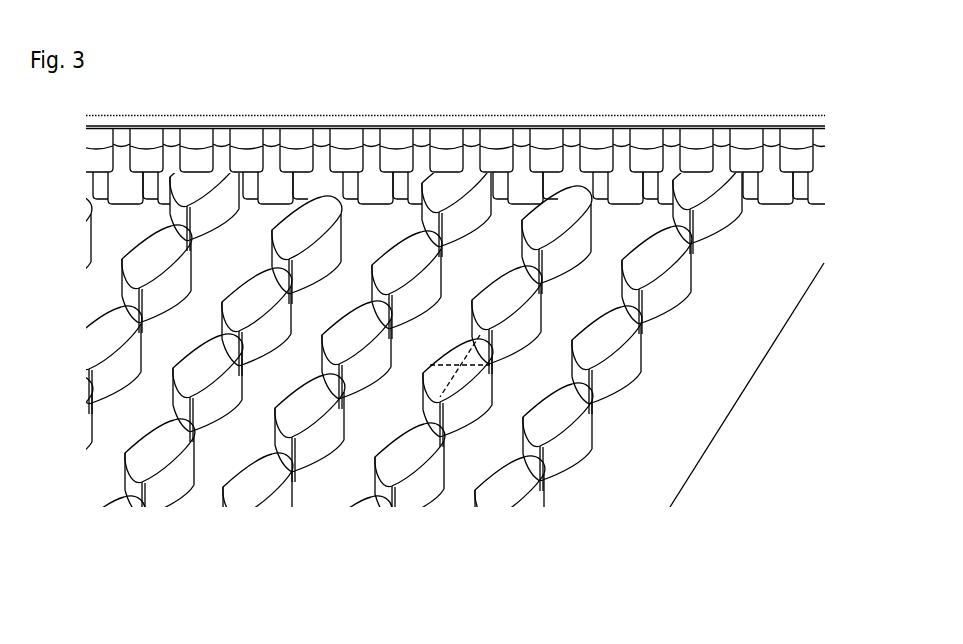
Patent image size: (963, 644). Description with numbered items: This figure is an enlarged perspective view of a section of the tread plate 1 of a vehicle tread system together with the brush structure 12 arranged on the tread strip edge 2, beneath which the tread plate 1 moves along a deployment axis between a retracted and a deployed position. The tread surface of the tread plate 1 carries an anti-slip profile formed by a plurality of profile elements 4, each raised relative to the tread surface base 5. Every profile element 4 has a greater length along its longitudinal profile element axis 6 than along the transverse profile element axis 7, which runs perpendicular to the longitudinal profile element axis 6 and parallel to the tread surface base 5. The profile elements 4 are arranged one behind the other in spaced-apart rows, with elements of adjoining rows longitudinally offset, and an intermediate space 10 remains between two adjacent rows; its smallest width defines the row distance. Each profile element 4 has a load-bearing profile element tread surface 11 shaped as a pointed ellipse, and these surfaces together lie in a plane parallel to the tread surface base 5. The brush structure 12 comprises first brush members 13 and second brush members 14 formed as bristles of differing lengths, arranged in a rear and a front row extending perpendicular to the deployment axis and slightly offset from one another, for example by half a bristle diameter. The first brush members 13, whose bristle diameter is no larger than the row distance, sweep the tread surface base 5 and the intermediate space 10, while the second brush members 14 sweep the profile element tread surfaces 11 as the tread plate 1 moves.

The tread plate 1 is at (618, 472).
The tread strip edge 2 is at (167, 118).
The profile element 4 is at (495, 492).
The tread surface base 5 is at (207, 480).
The longitudinal profile element axis 6 is at (445, 390).
The transverse profile element axis 7 is at (467, 368).
The intermediate space 10 is at (596, 270).
The profile element tread surface 11 is at (522, 472).
The brush structure 12 is at (840, 152).
The first brush member 13 is at (775, 195).
The second brush member 14 is at (748, 135).